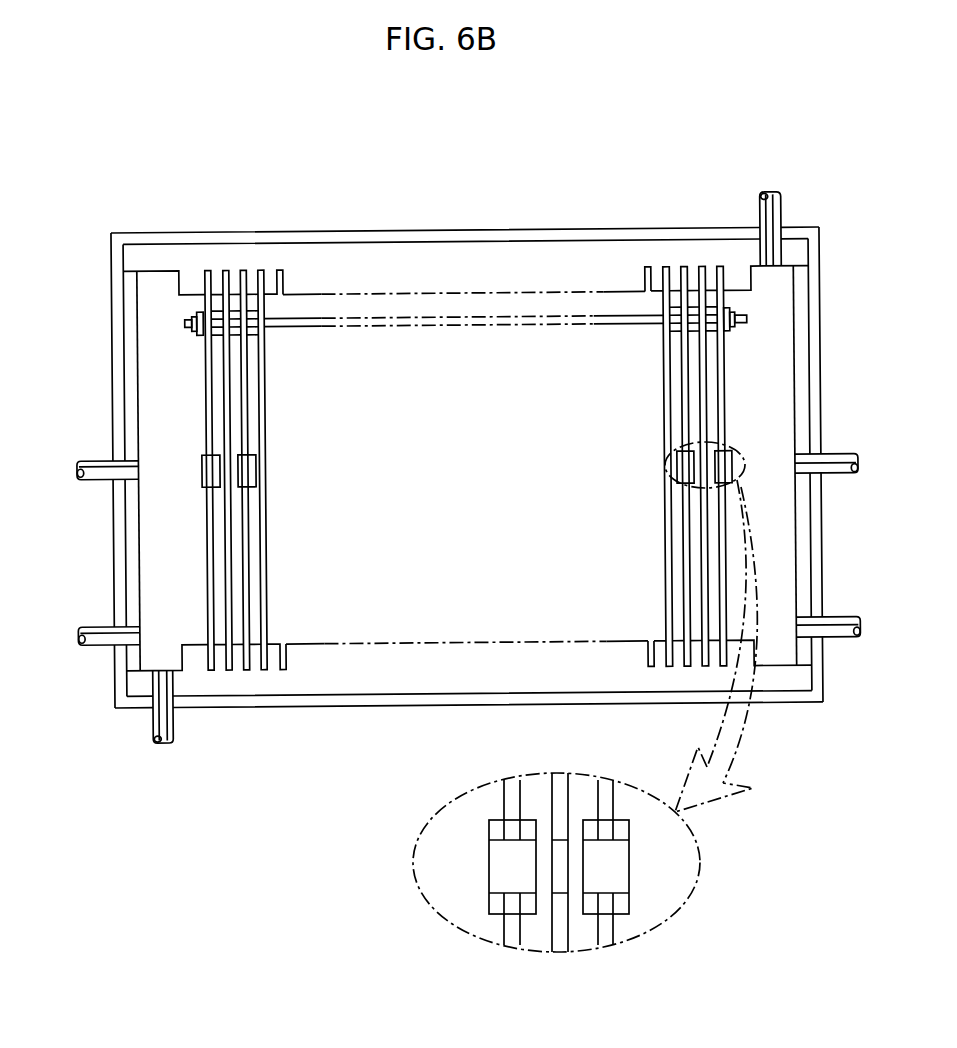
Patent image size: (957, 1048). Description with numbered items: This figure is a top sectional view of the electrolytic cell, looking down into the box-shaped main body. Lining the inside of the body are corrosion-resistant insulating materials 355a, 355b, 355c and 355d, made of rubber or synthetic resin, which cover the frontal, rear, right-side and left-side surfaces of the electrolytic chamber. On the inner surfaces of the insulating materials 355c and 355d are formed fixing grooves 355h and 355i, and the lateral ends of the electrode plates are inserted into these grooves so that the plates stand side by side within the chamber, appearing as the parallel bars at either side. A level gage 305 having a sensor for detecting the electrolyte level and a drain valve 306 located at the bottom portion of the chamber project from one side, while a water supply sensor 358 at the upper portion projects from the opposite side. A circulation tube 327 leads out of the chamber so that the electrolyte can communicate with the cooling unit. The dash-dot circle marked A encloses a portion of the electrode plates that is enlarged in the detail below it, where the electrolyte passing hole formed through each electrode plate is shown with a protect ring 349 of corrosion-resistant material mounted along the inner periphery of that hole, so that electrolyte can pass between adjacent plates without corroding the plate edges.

The corrosion-resistant insulating material 355a is at (130, 410).
The corrosion-resistant insulating material 355b is at (806, 405).
The corrosion-resistant insulating material 355c is at (345, 685).
The corrosion-resistant insulating material 355d is at (365, 258).
The fixing groove 355h is at (656, 665).
The fixing groove 355i is at (650, 267).
The level gage 305 is at (107, 470).
The drain valve 306 is at (107, 632).
The circulation tube 327 is at (163, 727).
The water supply sensor 358 is at (840, 478).
The protect ring 349 is at (495, 832).
The detail region A is at (735, 441).